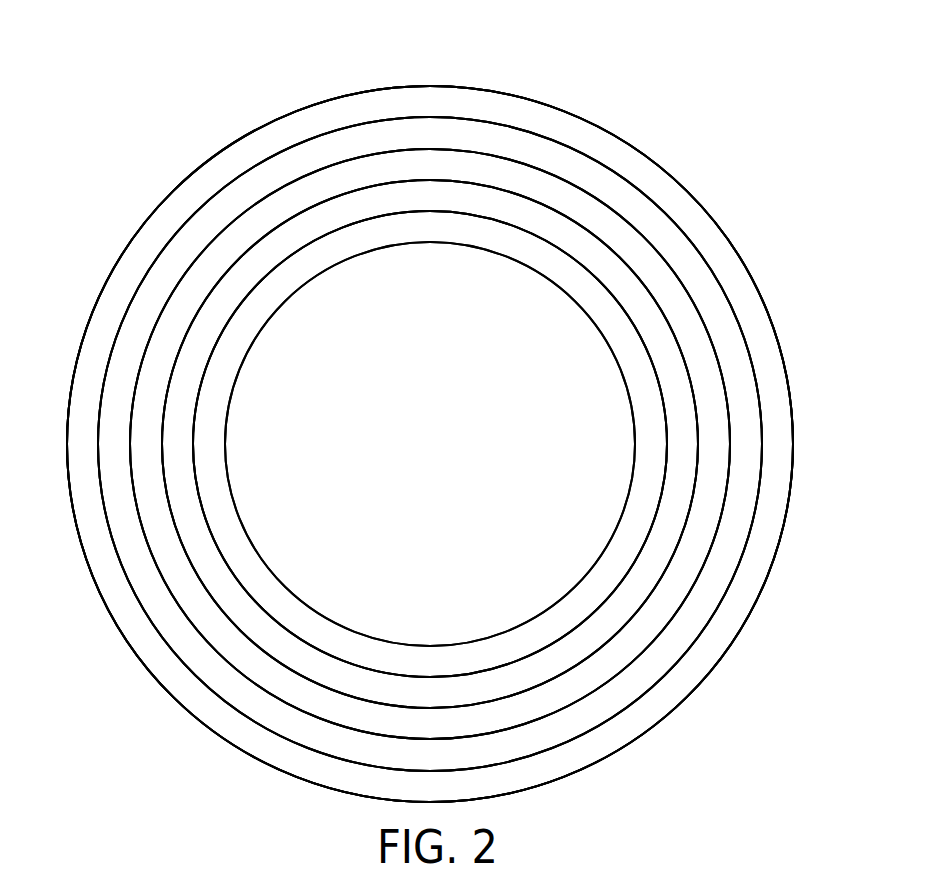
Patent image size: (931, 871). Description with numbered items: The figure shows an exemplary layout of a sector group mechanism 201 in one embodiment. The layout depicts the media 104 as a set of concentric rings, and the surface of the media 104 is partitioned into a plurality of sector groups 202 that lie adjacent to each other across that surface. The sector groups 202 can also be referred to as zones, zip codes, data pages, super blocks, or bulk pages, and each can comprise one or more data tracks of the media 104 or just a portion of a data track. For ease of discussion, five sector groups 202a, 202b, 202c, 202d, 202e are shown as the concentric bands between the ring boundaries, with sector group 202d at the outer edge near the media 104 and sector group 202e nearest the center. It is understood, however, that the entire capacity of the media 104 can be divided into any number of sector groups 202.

The sector group mechanism 201 is at (188, 67).
The media 104 is at (617, 133).
The sector groups 202 is at (675, 652).
The sector group 202a is at (160, 540).
The sector group 202b is at (165, 623).
The sector group 202c is at (216, 573).
The sector group 202d is at (172, 668).
The sector group 202e is at (260, 590).